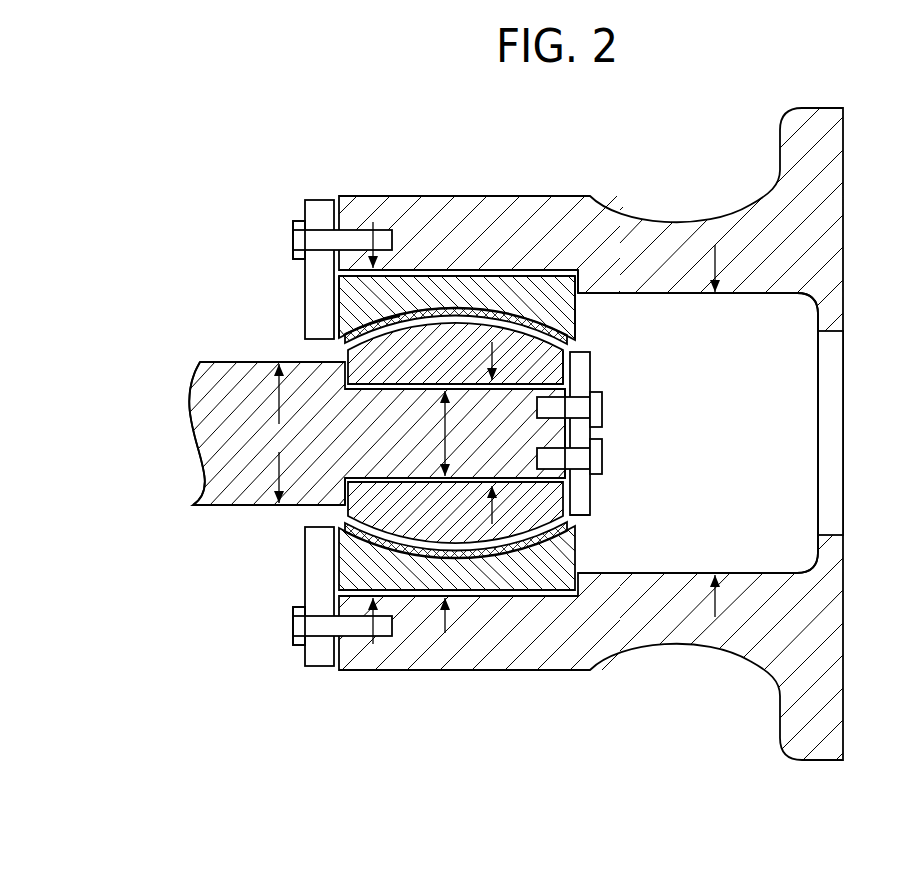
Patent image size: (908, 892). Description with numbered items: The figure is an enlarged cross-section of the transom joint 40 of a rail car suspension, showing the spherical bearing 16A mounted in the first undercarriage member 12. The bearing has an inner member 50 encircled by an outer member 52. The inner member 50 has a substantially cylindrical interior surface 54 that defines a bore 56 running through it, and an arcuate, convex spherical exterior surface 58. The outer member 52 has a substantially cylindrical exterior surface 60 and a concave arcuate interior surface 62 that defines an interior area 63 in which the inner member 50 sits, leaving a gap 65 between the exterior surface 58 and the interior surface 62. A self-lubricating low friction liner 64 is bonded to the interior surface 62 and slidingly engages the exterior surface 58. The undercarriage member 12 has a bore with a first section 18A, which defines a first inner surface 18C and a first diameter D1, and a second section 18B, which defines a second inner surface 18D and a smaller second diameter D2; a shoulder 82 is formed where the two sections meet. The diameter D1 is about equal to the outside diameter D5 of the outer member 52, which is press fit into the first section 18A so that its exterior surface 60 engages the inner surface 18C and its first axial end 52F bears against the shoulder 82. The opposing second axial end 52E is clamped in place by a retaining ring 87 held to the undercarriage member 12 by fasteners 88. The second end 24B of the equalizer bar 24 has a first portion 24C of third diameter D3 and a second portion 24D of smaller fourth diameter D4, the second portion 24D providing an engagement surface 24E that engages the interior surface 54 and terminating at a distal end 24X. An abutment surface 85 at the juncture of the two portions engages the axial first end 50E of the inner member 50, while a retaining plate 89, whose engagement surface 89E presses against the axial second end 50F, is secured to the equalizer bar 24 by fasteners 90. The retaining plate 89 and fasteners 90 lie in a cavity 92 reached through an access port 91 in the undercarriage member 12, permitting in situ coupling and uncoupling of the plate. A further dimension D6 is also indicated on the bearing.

The transom joint 40 is at (142, 120).
The first undercarriage member 12 is at (823, 132).
The retaining ring 87 is at (318, 205).
The fasteners 88 is at (293, 238).
The first diameter D1 is at (372, 222).
The inner member 50 is at (384, 340).
The outer member 52 is at (433, 290).
The arcuate interior surface 62 is at (458, 312).
The exterior surface 60 is at (519, 277).
The first section 18A is at (550, 262).
The shoulder 82 is at (583, 288).
The first axial end 52F is at (583, 317).
The spherical bearing 16A is at (657, 292).
The second axial end 52E is at (339, 300).
The low friction liner 64 is at (345, 340).
The interior area 63 is at (580, 340).
The axial first end 50E is at (255, 374).
The second inner surface 18D is at (748, 295).
The second end 24B is at (243, 404).
The second section 18B is at (737, 406).
The first portion 24C is at (215, 437).
The engagement surface 24E is at (376, 389).
The third diameter D3 is at (278, 433).
The fourth diameter D4 is at (443, 432).
The arcuate exterior surface 58 is at (462, 535).
The race thickness D6 is at (495, 350).
The axial second end 50F is at (582, 360).
The distal end 24X is at (565, 392).
The fasteners 90 is at (602, 408).
The cavity 92 is at (778, 460).
The second portion 24D is at (600, 462).
The equalizer bar 24 is at (225, 484).
The abutment surface 85 is at (345, 513).
The retaining plate 89 is at (582, 493).
The engagement surface 89E is at (566, 512).
The access port 91 is at (830, 500).
The bore 56 is at (410, 477).
The interior surface 54 is at (566, 556).
The gap 65 is at (368, 572).
The first inner surface 18C is at (517, 592).
The outside diameter D5 is at (446, 634).
The second diameter D2 is at (716, 617).